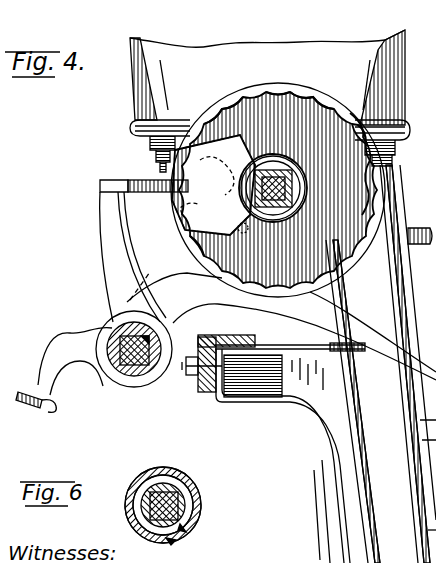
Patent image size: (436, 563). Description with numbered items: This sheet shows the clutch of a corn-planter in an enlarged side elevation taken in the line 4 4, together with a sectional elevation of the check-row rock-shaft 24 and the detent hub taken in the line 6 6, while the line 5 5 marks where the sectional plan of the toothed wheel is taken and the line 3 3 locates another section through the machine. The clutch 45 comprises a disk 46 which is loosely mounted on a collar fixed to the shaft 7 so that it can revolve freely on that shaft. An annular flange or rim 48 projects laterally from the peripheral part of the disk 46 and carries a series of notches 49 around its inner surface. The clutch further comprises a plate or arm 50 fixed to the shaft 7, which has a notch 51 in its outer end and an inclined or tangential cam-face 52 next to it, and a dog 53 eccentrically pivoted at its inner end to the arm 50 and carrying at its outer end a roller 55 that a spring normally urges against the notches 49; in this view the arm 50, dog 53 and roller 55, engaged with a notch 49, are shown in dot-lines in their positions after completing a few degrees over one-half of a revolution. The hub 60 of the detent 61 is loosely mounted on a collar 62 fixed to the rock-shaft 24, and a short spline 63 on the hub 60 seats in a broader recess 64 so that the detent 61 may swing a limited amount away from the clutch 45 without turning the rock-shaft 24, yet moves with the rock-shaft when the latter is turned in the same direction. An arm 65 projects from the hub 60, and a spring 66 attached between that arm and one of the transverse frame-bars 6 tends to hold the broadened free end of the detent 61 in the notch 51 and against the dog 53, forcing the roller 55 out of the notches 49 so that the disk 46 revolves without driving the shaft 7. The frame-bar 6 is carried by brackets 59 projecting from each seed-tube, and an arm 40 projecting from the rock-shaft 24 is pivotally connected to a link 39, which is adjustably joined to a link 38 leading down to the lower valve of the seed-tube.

In FIG. 4, the section line 3 is at (381, 364).
In FIG. 4, the section line 4 is at (267, 77).
In FIG. 4, the section line 5 is at (430, 185).
In FIG. 4, the frame-bar 6 is at (205, 392).
In FIG. 4, the shaft 7 is at (226, 200).
In FIG. 4, the rock-shaft 24 is at (140, 360).
In FIG. 6, the rock-shaft 24 is at (163, 470).
In FIG. 4, the link 38 is at (435, 539).
In FIG. 4, the link 39 is at (435, 428).
In FIG. 4, the arm 40 is at (382, 342).
In FIG. 4, the clutch 45 is at (294, 90).
In FIG. 4, the disk 46 is at (235, 110).
In FIG. 4, the annular flange or rim 48 is at (320, 100).
In FIG. 4, the notches 49 is at (350, 120).
In FIG. 4, the plate or arm 50 is at (272, 92).
In FIG. 4, the notch 51 is at (160, 184).
In FIG. 4, the cam-face 52 is at (190, 250).
In FIG. 4, the dog 53 is at (240, 196).
In FIG. 4, the roller 55 is at (369, 120).
In FIG. 4, the brackets 59 is at (292, 398).
In FIG. 4, the hub 60 is at (120, 370).
In FIG. 6, the hub 60 is at (196, 492).
In FIG. 4, the detent 61 is at (120, 186).
In FIG. 4, the collar 62 is at (150, 362).
In FIG. 6, the collar 62 is at (196, 506).
In FIG. 6, the spline 63 is at (186, 532).
In FIG. 6, the recess 64 is at (172, 540).
In FIG. 4, the arm 65 is at (68, 345).
In FIG. 4, the spring 66 is at (26, 392).